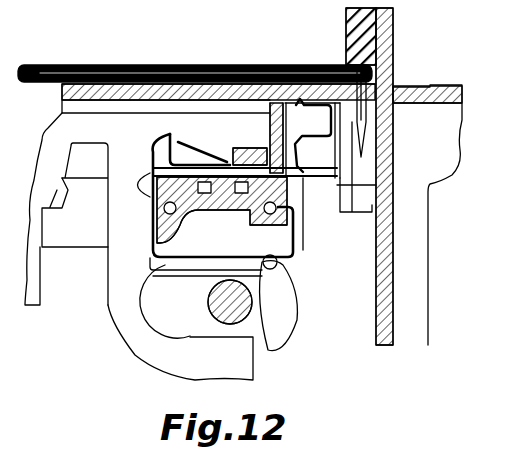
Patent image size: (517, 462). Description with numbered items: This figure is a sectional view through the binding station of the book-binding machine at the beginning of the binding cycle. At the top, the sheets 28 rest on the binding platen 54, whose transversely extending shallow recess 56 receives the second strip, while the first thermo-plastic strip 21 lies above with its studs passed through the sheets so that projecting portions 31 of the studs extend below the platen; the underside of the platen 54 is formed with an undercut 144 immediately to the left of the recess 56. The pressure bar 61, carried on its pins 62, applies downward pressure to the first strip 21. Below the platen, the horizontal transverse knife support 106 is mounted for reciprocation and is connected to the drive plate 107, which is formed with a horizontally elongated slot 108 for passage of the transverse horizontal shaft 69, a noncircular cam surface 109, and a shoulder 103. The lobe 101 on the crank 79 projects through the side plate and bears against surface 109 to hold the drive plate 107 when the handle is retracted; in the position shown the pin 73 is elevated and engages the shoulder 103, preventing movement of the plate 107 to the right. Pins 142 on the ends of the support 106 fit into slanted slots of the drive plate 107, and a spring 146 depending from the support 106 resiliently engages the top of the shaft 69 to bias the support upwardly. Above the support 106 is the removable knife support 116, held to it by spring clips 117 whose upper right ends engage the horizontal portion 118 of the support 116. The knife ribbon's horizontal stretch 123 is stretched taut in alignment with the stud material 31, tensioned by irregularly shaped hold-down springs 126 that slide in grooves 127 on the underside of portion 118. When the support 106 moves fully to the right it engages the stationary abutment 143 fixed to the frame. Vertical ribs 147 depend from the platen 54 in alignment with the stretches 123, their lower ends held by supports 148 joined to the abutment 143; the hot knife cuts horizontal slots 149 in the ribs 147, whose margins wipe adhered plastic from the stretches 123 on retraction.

The first thermo-plastic strip 21 is at (349, 62).
The sheets 28 is at (186, 80).
The projecting portions of studs 31 is at (345, 130).
The binding platen 54 is at (107, 82).
The shallow recess 56 is at (378, 90).
The pressure bar 61 is at (394, 3).
The pins 62 is at (394, 37).
The transverse horizontal shaft 69 is at (240, 300).
The pin 73 is at (278, 275).
The crank 79 is at (82, 237).
The lobe 101 is at (50, 236).
The shoulder 103 is at (274, 242).
The knife support 106 is at (199, 243).
The drive plate 107 is at (163, 140).
The horizontally elongated slot 108 is at (190, 329).
The surface 109 is at (66, 164).
The removable knife support 116 is at (266, 111).
The spring clips 117 is at (157, 158).
The horizontal portion 118 is at (217, 207).
The horizontal stretch of ribbon 123 is at (300, 102).
The hold-down springs 126 is at (337, 170).
The grooves 127 is at (262, 145).
The pins 142 is at (164, 209).
The stationary abutment 143 is at (372, 160).
The undercut 144 is at (306, 68).
The spring 146 is at (190, 280).
The vertical ribs 147 is at (345, 192).
The supports 148 is at (333, 215).
The horizontal slots 149 is at (392, 98).